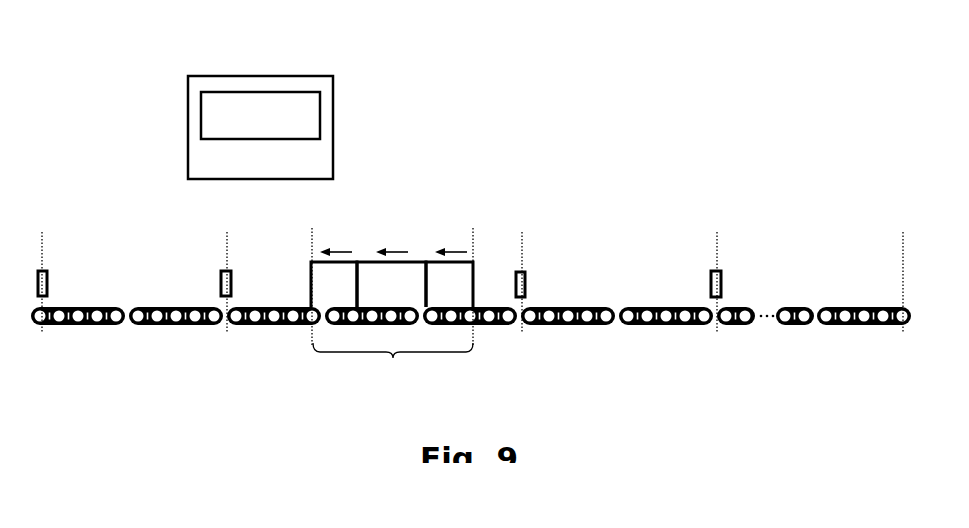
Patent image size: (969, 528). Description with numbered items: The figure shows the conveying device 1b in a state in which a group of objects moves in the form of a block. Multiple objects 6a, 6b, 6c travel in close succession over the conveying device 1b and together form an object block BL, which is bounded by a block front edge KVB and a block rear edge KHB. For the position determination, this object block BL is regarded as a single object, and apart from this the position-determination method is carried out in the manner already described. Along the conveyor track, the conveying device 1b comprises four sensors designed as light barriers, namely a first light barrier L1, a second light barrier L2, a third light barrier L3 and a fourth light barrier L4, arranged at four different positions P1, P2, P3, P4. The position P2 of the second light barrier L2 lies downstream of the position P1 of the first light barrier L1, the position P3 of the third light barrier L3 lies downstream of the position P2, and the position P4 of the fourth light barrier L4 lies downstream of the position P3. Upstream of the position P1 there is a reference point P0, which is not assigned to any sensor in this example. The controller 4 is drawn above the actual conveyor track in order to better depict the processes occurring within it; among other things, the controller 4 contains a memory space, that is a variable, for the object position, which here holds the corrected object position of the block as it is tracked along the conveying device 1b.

The conveying device 1b is at (800, 96).
The controller 4 is at (197, 108).
The object 6a is at (334, 277).
The object 6b is at (391, 277).
The object 6c is at (449, 277).
The first light barrier L1 is at (722, 283).
The second light barrier L2 is at (526, 276).
The third light barrier L3 is at (218, 275).
The fourth light barrier L4 is at (47, 285).
The reference point P0 is at (903, 214).
The position of the first light barrier P1 is at (717, 214).
The position of the second light barrier P2 is at (521, 214).
The position of the third light barrier P3 is at (227, 214).
The position of the fourth light barrier P4 is at (42, 214).
The block front edge KVB is at (303, 213).
The block rear edge KHB is at (473, 213).
The object block BL is at (393, 369).